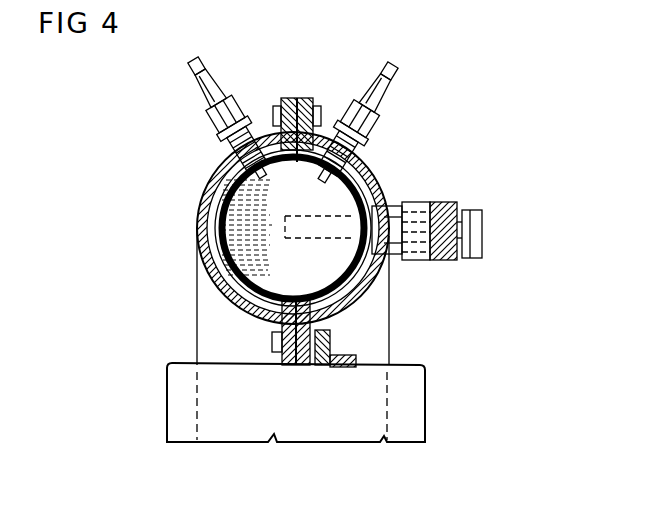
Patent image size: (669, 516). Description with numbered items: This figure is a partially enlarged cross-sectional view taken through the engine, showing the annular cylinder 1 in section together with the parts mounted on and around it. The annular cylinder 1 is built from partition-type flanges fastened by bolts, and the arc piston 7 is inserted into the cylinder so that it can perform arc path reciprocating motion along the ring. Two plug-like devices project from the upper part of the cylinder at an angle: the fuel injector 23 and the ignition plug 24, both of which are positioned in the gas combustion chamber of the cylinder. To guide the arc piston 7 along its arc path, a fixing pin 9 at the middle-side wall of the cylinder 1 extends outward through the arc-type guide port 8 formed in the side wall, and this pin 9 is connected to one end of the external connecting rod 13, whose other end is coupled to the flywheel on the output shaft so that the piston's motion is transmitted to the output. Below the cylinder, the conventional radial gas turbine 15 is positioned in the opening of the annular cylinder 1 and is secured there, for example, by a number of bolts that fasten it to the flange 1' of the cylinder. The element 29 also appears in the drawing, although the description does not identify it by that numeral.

The annular cylinder 1 is at (236, 248).
The flange 1' is at (317, 84).
The arc piston 7 is at (267, 237).
The arc-type guide port 8 is at (402, 204).
The fixing pin 9 is at (482, 228).
The external connecting rod 13 is at (447, 200).
The radial gas turbine 15 is at (172, 382).
The fuel injector 23 is at (200, 82).
The ignition plug 24 is at (400, 72).
The clamp 29 is at (384, 288).